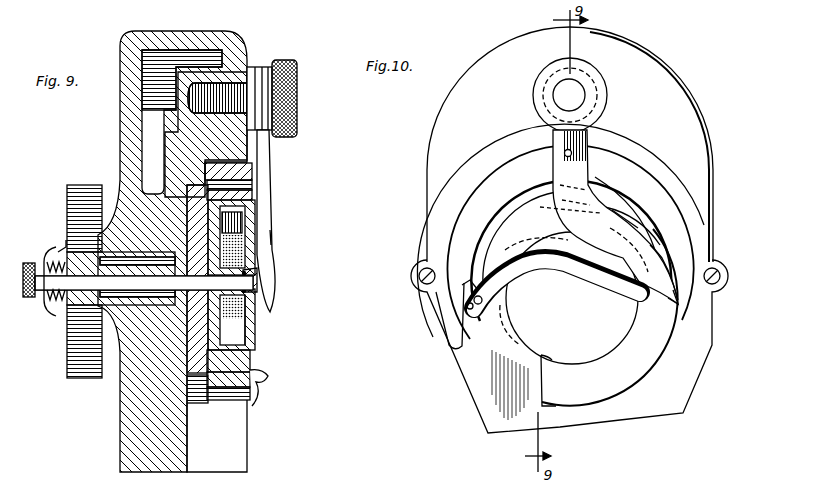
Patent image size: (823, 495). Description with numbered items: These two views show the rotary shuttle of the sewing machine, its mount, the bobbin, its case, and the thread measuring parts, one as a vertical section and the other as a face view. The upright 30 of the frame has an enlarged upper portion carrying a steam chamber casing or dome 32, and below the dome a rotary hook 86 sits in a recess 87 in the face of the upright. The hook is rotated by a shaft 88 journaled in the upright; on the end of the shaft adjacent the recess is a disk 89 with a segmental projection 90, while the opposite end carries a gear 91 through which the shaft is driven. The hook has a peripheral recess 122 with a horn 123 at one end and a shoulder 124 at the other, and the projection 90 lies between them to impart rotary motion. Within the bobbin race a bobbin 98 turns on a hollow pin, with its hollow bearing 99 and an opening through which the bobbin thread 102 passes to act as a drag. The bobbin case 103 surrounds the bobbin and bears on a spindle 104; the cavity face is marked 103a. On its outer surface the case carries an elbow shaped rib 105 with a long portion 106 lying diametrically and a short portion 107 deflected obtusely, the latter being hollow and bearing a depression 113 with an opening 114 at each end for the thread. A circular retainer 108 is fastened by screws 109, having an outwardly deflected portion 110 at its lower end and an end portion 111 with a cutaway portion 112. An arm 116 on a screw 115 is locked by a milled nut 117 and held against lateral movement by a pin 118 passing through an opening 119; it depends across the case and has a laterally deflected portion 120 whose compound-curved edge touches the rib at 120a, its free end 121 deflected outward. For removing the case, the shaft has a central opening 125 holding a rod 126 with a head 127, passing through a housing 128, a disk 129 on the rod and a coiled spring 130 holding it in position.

In FIG. 9, the upright 30 is at (142, 421).
In FIG. 10, the upright 30 is at (686, 390).
In FIG. 9, the steam chamber casing or dome 32 is at (130, 108).
In FIG. 10, the steam chamber casing or dome 32 is at (678, 92).
In FIG. 9, the rotary hook 86 is at (251, 369).
In FIG. 10, the rotary hook 86 is at (648, 331).
In FIG. 9, the recess 87 is at (252, 166).
In FIG. 9, the shaft 88 is at (66, 246).
In FIG. 9, the disk 89 is at (201, 352).
In FIG. 9, the segmental projection 90 is at (250, 191).
In FIG. 10, the segmental projection 90 is at (617, 204).
In FIG. 9, the gear 91 is at (67, 203).
In FIG. 9, the bobbin 98 is at (256, 340).
In FIG. 9, the hollow bearing 99 is at (246, 272).
In FIG. 9, the bobbin thread 102 is at (243, 230).
In FIG. 9, the bobbin case 103 is at (256, 313).
In FIG. 10, the bobbin case 103 is at (582, 328).
In FIG. 10, the shoulder 103a is at (528, 325).
In FIG. 9, the spindle 104 is at (246, 291).
In FIG. 9, the elbow shaped rib 105 is at (259, 279).
In FIG. 10, the elbow shaped rib 105 is at (562, 296).
In FIG. 10, the long portion 106 is at (608, 298).
In FIG. 10, the short portion 107 is at (526, 283).
In FIG. 9, the circular retainer 108 is at (250, 356).
In FIG. 10, the circular retainer 108 is at (457, 220).
In FIG. 10, the screws 109 is at (418, 275).
In FIG. 9, the outwardly deflected portion 110 is at (270, 385).
In FIG. 10, the outwardly deflected portion 110 is at (568, 389).
In FIG. 10, the end portion 111 is at (452, 323).
In FIG. 10, the cutaway portion 112 is at (466, 290).
In FIG. 10, the depression 113 is at (487, 330).
In FIG. 10, the opening 114 is at (467, 302).
In FIG. 9, the screw 115 is at (246, 68).
In FIG. 10, the screw 115 is at (582, 95).
In FIG. 9, the arm 116 is at (266, 156).
In FIG. 10, the arm 116 is at (556, 165).
In FIG. 9, the milled nut 117 is at (298, 108).
In FIG. 10, the milled nut 117 is at (533, 91).
In FIG. 10, the pin 118 is at (565, 152).
In FIG. 10, the opening 119 is at (576, 153).
In FIG. 9, the laterally deflected portion 120 is at (271, 238).
In FIG. 10, the laterally deflected portion 120 is at (660, 259).
In FIG. 10, the contact point 120a is at (640, 262).
In FIG. 10, the free end 121 is at (675, 302).
In FIG. 10, the peripheral recess 122 is at (640, 212).
In FIG. 10, the horn 123 is at (661, 238).
In FIG. 10, the shoulder 124 is at (548, 188).
In FIG. 9, the central opening 125 is at (137, 290).
In FIG. 9, the rod 126 is at (116, 206).
In FIG. 9, the head 127 is at (34, 264).
In FIG. 9, the housing 128 is at (50, 302).
In FIG. 9, the disk 129 is at (54, 314).
In FIG. 9, the coiled spring 130 is at (63, 310).